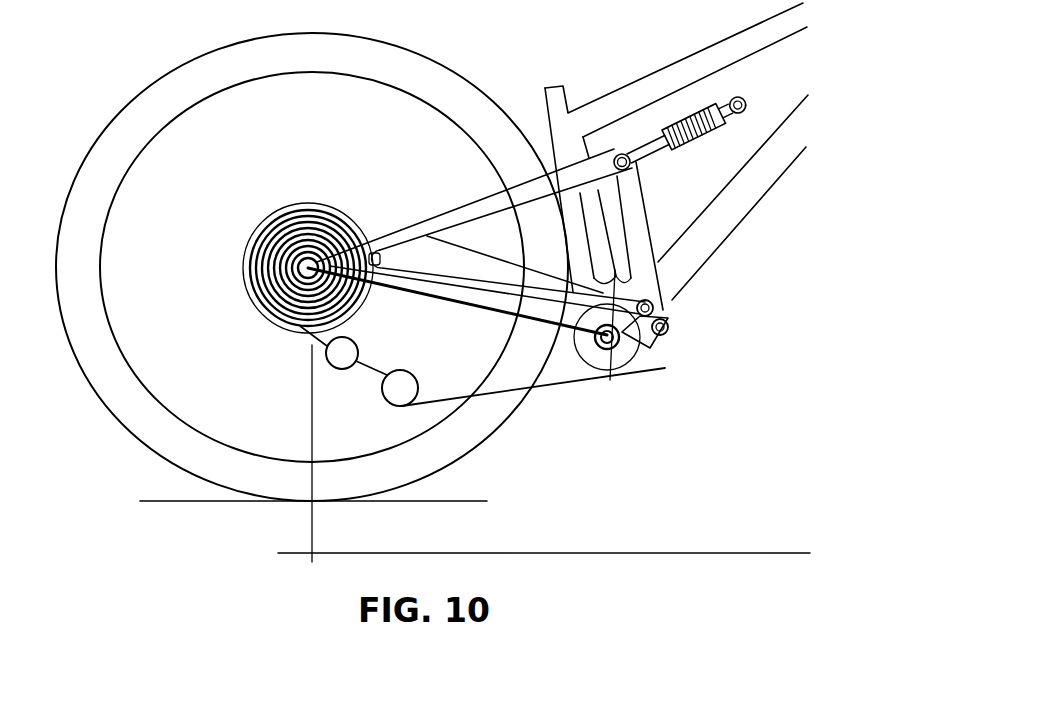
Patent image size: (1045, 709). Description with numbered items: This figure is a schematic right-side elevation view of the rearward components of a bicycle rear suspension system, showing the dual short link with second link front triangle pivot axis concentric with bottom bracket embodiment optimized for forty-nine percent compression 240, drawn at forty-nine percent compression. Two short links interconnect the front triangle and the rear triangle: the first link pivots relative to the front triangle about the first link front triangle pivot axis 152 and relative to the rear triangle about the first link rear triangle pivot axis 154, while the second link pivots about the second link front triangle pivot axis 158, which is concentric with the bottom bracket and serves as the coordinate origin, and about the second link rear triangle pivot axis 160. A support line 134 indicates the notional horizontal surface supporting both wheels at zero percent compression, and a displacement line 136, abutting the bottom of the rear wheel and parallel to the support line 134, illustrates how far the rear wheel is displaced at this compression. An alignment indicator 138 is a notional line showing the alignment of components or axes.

The dual short link with second link front triangle pivot axis concentric with botto 240 is at (518, 100).
The second link rear triangle pivot axis 160 is at (663, 300).
The first link rear triangle pivot axis 154 is at (670, 325).
The first link front triangle pivot axis 152 is at (652, 348).
The second link front triangle pivot axis 158 is at (620, 355).
The alignment indicator 138 is at (520, 403).
The displacement line 136 is at (458, 500).
The support line 134 is at (653, 553).